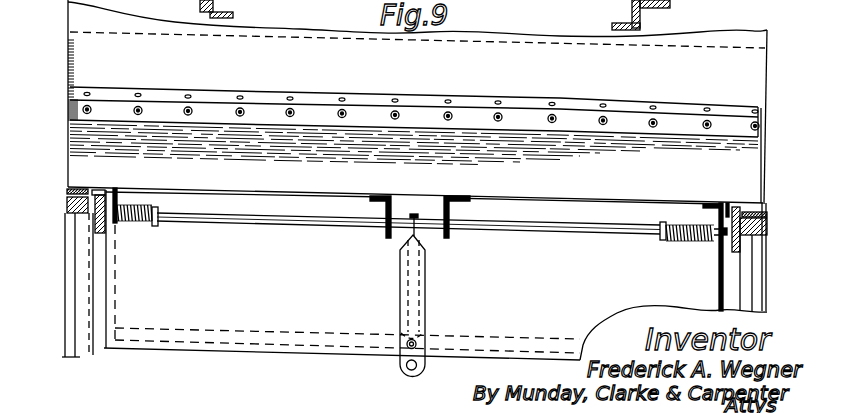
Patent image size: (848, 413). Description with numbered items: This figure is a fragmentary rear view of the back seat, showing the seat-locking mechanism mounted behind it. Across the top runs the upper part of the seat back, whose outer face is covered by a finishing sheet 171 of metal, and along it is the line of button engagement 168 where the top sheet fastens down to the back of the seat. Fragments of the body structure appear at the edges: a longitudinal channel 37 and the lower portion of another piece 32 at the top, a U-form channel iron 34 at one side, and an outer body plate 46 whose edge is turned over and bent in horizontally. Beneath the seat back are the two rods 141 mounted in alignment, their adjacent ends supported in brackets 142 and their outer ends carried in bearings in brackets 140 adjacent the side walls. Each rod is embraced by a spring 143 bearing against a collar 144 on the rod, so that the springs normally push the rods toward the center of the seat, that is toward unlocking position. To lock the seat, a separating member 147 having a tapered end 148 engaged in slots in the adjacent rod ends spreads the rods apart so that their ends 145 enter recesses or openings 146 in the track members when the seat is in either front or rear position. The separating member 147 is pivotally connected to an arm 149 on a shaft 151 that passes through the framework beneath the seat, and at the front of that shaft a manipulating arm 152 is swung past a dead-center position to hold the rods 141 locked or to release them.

The bracket 32 is at (632, 8).
The longitudinal channels 37 is at (703, 0).
The finishing sheet 171 is at (747, 66).
The button engagement 168 is at (652, 107).
The brackets 140 is at (720, 203).
The channel iron 34 is at (85, 276).
The outer body plates 46 is at (63, 294).
The brackets 142 is at (450, 212).
The rods 141 is at (604, 232).
The collar 144 is at (662, 241).
The spring 143 is at (701, 244).
The ends 145 is at (774, 210).
The recesses or openings 146 is at (747, 238).
The separating member 147 is at (426, 279).
The tapered end 148 is at (401, 239).
The manipulating arm 152 is at (398, 298).
The arm 149 is at (404, 358).
The shaft 151 is at (405, 374).